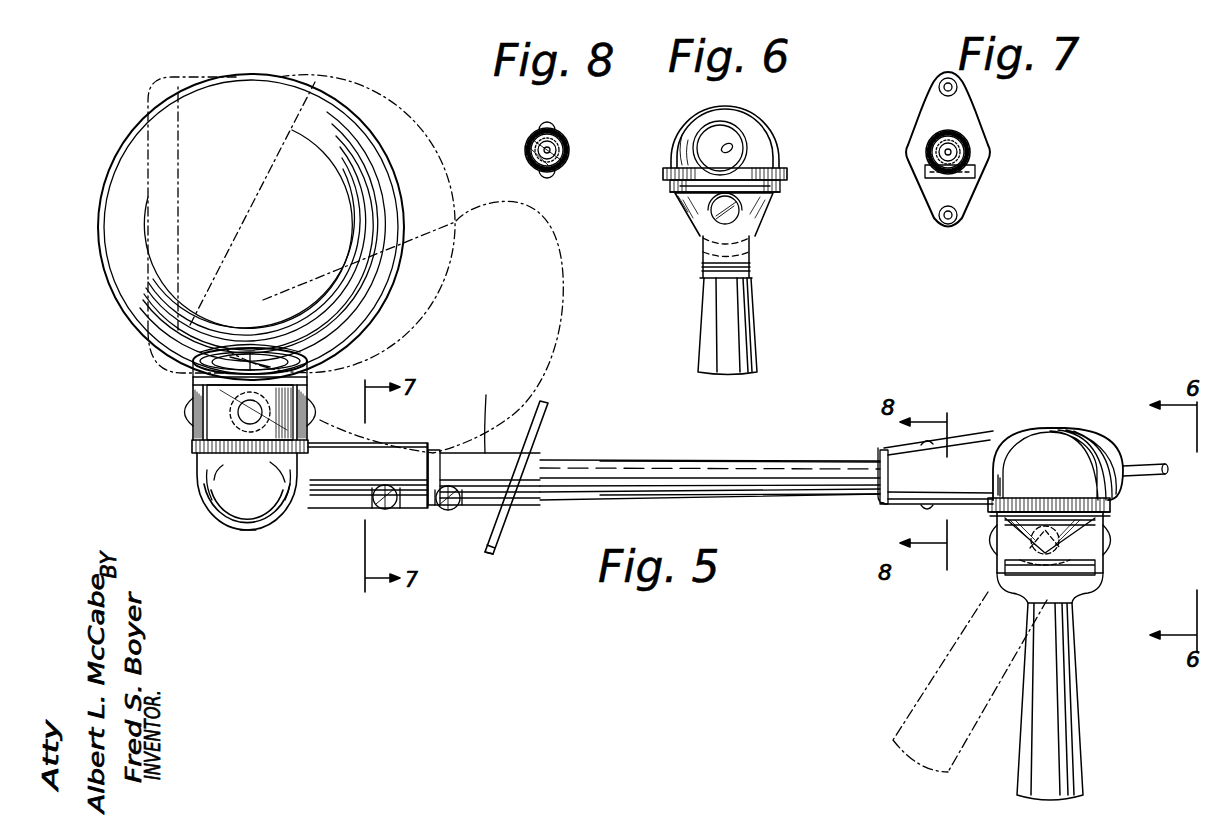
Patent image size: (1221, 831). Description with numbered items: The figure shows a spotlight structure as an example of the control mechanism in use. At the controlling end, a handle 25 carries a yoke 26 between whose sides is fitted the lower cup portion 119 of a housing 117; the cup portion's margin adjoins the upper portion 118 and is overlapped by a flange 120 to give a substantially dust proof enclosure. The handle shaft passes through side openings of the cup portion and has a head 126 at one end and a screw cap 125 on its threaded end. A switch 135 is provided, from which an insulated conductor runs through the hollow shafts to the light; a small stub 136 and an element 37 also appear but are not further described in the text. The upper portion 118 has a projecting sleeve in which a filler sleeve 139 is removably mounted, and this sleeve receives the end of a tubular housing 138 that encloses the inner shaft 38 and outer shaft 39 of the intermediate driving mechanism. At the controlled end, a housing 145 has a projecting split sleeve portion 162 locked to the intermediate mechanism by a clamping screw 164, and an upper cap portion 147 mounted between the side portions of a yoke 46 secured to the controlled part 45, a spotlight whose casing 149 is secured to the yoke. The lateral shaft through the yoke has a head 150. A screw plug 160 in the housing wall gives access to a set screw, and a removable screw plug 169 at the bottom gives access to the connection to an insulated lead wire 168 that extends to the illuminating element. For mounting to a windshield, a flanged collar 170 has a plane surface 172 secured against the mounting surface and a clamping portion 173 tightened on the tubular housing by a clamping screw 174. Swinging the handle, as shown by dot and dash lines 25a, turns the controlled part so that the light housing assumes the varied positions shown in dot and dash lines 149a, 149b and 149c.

In FIG. 5, the casing 149 is at (101, 222).
In FIG. 5, the dot and dash lines 149a is at (198, 72).
In FIG. 5, the dot and dash lines 149b is at (399, 104).
In FIG. 5, the dot and dash lines 149c is at (566, 312).
In FIG. 5, the insulated lead wire 168 is at (256, 364).
In FIG. 5, the controlled part 45 is at (322, 354).
In FIG. 5, the yoke 46 is at (312, 375).
In FIG. 5, the upper cap portion 147 is at (217, 393).
In FIG. 5, the head 150 is at (190, 418).
In FIG. 5, the screw plug 160 is at (200, 484).
In FIG. 5, the housing 145 is at (222, 512).
In FIG. 5, the screw plug 169 is at (248, 532).
In FIG. 5, the clamping screw 164 is at (356, 508).
In FIG. 7, the clamping screw 164 is at (976, 174).
In FIG. 5, the sleeve portion 162 is at (396, 509).
In FIG. 8, the sleeve portion 162 is at (526, 133).
In FIG. 5, the clamping screw 174 is at (455, 508).
In FIG. 5, the flanged collar 170 is at (490, 439).
In FIG. 5, the plane surface 172 is at (549, 426).
In FIG. 5, the clamping portion 173 is at (481, 549).
In FIG. 5, the shaft 37 is at (691, 461).
In FIG. 5, the tubular housing 138 is at (790, 461).
In FIG. 7, the tubular housing 138 is at (970, 161).
In FIG. 8, the tubular housing 138 is at (570, 150).
In FIG. 5, the filler sleeve 139 is at (883, 500).
In FIG. 5, the upper portion 118 is at (982, 452).
In FIG. 5, the housing 117 is at (1078, 430).
In FIG. 6, the housing 117 is at (760, 118).
In FIG. 5, the stud 136 is at (1166, 466).
In FIG. 6, the stud 136 is at (735, 147).
In FIG. 5, the switch 135 is at (1110, 504).
In FIG. 6, the switch 135 is at (741, 160).
In FIG. 5, the lower cup portion 119 is at (1085, 548).
In FIG. 6, the lower cup portion 119 is at (772, 216).
In FIG. 5, the head 126 is at (1112, 529).
In FIG. 6, the head 126 is at (718, 218).
In FIG. 5, the flange 120 is at (997, 508).
In FIG. 6, the flange 120 is at (790, 188).
In FIG. 5, the screw cap 125 is at (993, 546).
In FIG. 5, the yoke 26 is at (1100, 566).
In FIG. 6, the yoke 26 is at (752, 247).
In FIG. 5, the handle 25 is at (1067, 724).
In FIG. 6, the handle 25 is at (745, 345).
In FIG. 5, the dot and dash lines 25a is at (926, 661).
In FIG. 7, the shaft 38 is at (963, 136).
In FIG. 8, the shaft 38 is at (561, 131).
In FIG. 7, the shaft 39 is at (961, 149).
In FIG. 8, the shaft 39 is at (566, 141).